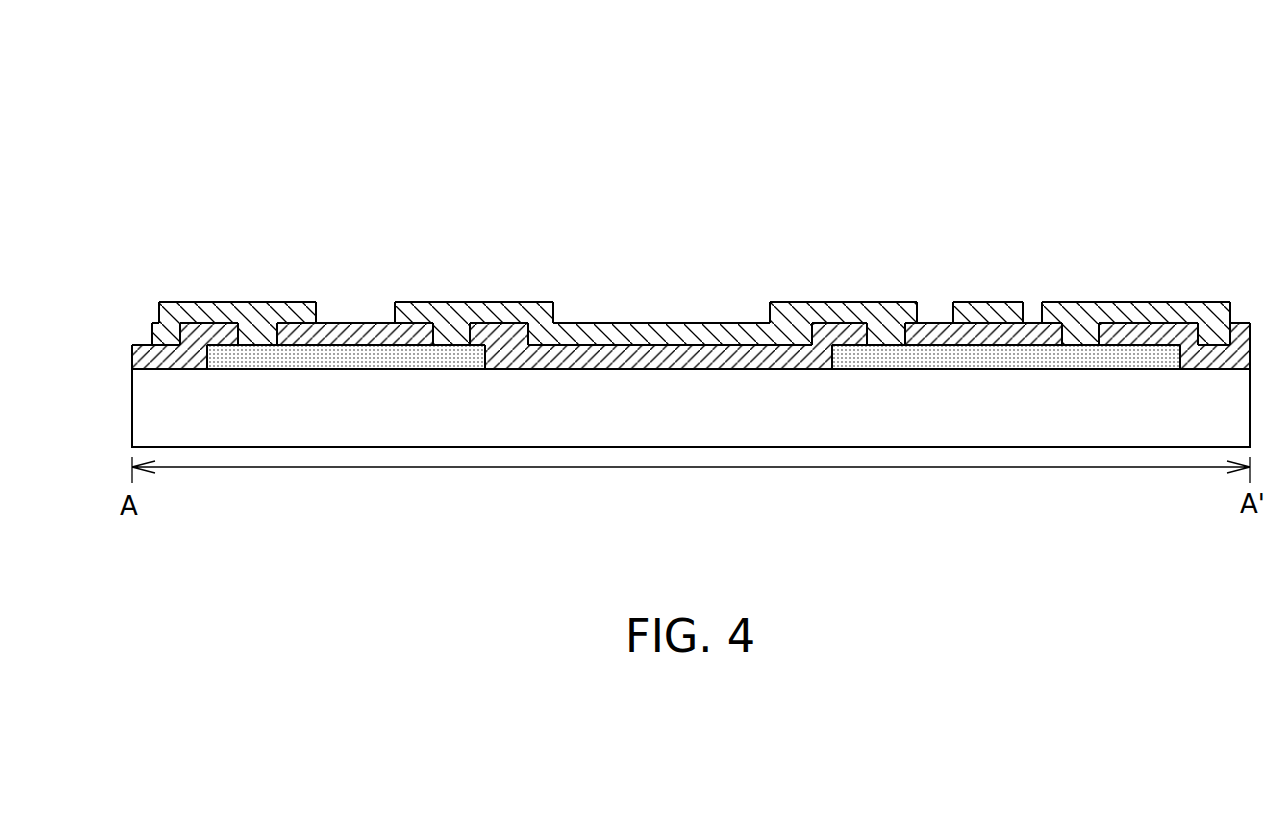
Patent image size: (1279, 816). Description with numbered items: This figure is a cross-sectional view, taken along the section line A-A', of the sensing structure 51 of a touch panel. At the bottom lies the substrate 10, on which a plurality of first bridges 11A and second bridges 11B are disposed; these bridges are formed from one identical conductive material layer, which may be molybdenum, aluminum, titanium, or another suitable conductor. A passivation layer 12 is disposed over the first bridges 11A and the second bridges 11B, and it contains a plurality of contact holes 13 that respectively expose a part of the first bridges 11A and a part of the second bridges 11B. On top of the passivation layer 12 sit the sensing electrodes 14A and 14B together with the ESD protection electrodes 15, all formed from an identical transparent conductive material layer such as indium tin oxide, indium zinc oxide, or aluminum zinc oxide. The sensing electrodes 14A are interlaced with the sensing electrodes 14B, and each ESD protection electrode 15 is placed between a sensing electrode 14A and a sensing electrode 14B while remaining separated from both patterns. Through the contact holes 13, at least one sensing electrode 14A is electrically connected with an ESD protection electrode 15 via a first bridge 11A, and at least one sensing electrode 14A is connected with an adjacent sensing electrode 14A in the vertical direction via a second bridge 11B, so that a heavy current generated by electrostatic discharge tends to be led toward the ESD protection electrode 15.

The substrate 10 is at (679, 422).
The first bridges 11A is at (405, 357).
The second bridges 11B is at (1037, 357).
The passivation layer 12 is at (145, 344).
The contact holes 13 is at (253, 333).
The sensing electrodes 14A is at (798, 312).
The sensing electrodes 14B is at (988, 310).
The ESD protection electrodes 15 is at (291, 311).
The sensing structure 51 is at (1130, 142).